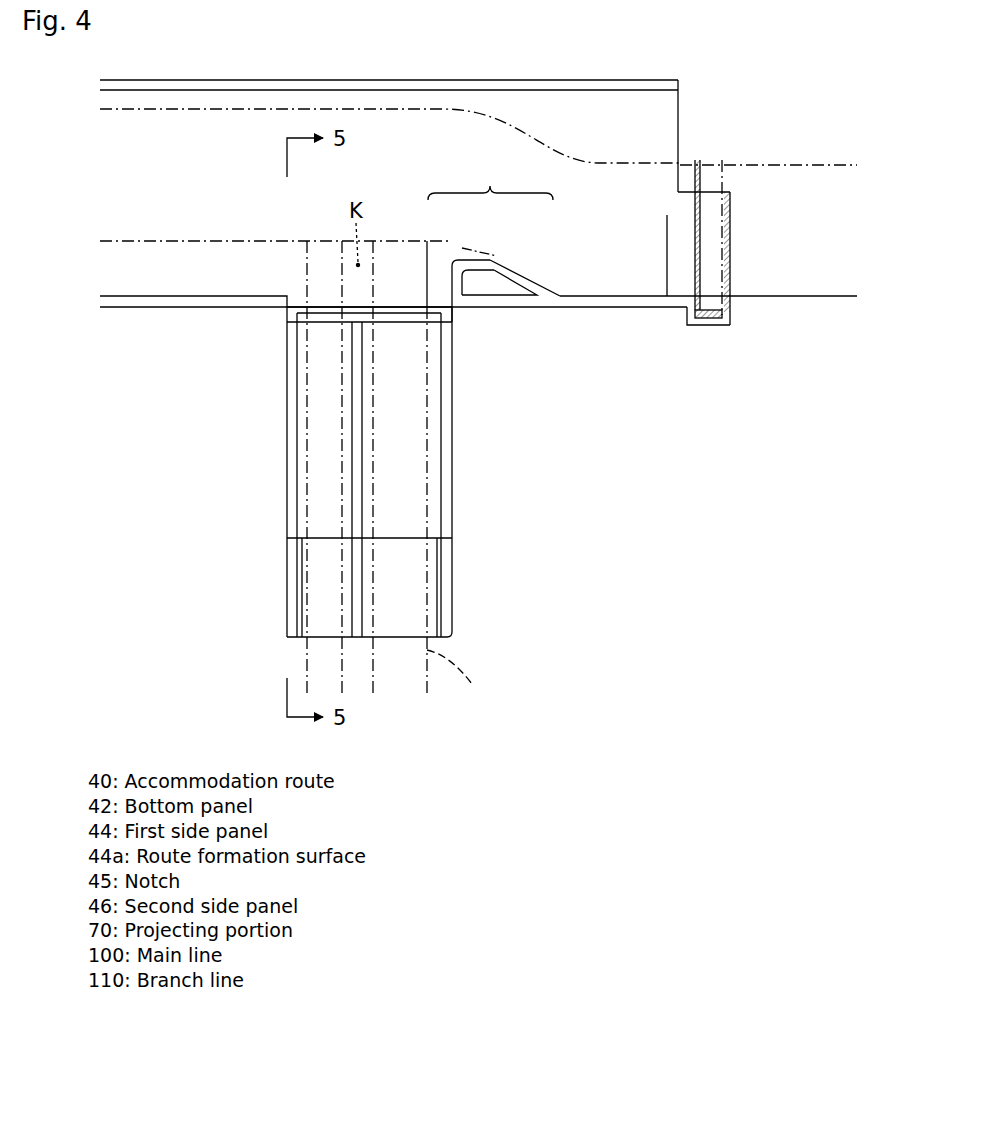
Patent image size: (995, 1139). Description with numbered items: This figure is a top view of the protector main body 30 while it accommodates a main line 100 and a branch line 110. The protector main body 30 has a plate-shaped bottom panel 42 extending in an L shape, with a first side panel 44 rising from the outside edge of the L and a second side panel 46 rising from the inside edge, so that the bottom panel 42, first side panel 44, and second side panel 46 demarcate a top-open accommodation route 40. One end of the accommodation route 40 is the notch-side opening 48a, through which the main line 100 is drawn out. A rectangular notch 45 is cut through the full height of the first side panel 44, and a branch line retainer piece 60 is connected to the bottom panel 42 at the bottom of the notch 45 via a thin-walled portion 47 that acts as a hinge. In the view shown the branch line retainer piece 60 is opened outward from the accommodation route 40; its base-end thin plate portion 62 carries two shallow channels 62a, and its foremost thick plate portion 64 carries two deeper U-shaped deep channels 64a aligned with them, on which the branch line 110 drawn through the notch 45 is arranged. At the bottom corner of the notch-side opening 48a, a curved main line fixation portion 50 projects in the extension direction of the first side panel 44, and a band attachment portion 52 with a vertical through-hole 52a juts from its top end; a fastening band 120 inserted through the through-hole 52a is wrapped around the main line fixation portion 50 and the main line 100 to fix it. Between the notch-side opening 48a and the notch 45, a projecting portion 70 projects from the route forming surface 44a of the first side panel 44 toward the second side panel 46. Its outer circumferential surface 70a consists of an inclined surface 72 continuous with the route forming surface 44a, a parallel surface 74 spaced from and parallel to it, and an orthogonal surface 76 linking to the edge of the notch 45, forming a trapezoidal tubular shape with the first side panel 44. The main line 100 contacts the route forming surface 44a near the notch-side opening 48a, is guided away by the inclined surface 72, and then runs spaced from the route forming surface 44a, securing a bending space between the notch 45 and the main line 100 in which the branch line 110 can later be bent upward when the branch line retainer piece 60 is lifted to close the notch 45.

The protector main body 30 is at (697, 66).
The accommodation route 40 is at (602, 122).
The bottom panel 42 is at (666, 125).
The first side panel 44 is at (610, 308).
The route forming surface 44a is at (618, 296).
The notch 45 is at (455, 312).
The second side panel 46 is at (570, 80).
The thin-walled portion 47 is at (290, 307).
The notch-side opening 48a is at (679, 88).
The main line fixation portion 50 is at (731, 222).
The band attachment portion 52 is at (705, 326).
The through-hole 52a is at (722, 316).
The branch line retainer piece 60 is at (404, 472).
The thin plate portion 62 is at (457, 431).
The shallow channels 62a is at (363, 465).
The thick plate portion 64 is at (457, 589).
The deep channels 64a is at (363, 598).
The projecting portion 70 is at (508, 233).
The outer circumferential surface 70a is at (490, 180).
The inclined surface 72 is at (527, 277).
The parallel surface 74 is at (478, 262).
The orthogonal surface 76 is at (452, 282).
The main line 100 is at (826, 163).
The branch line 110 is at (342, 673).
The fastening band 120 is at (724, 258).